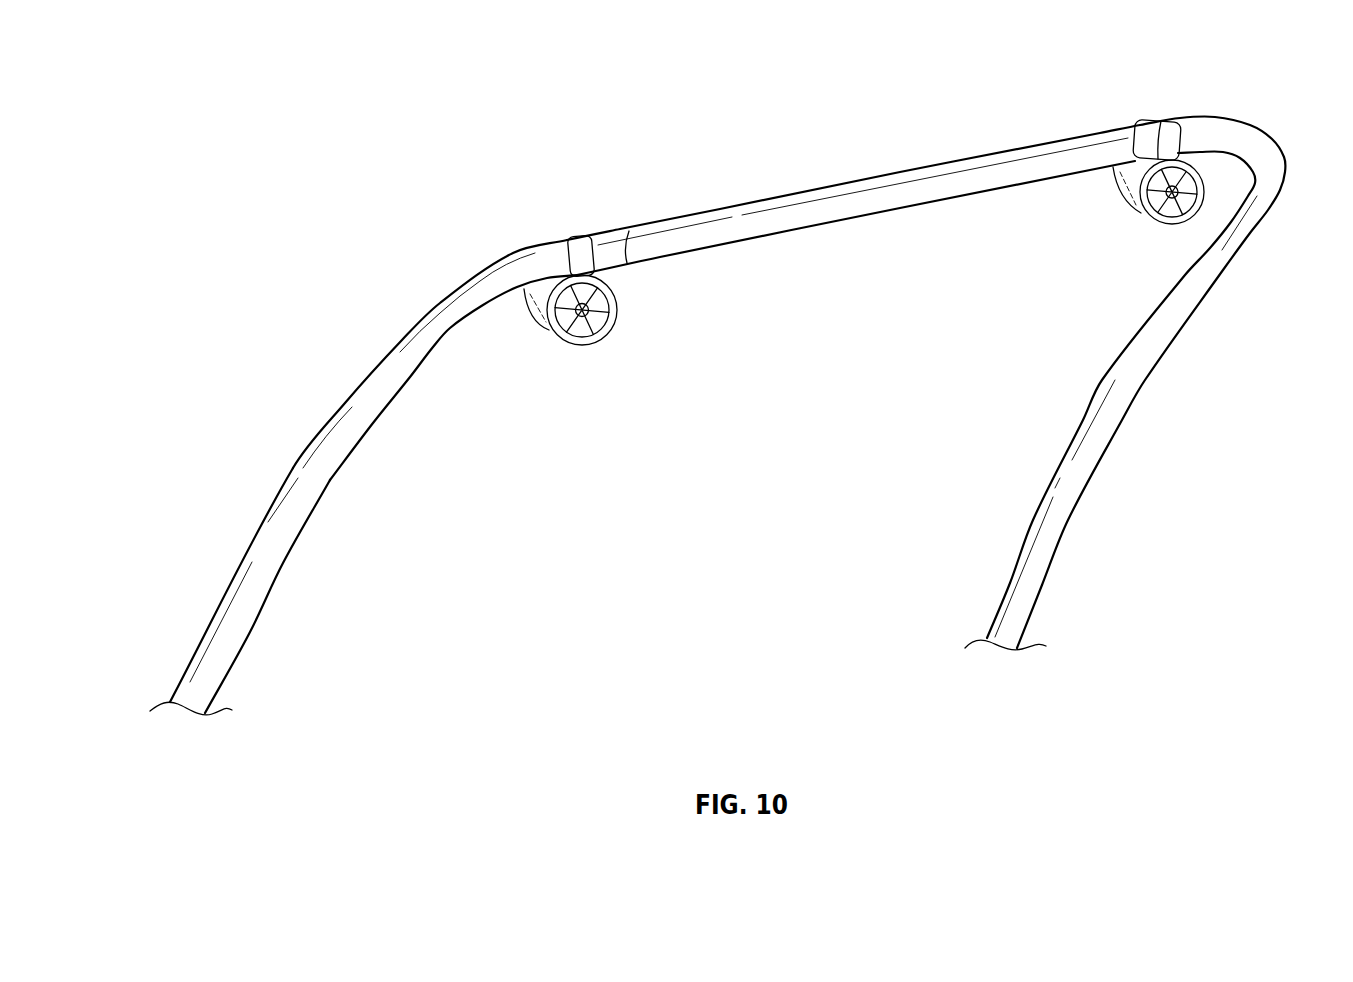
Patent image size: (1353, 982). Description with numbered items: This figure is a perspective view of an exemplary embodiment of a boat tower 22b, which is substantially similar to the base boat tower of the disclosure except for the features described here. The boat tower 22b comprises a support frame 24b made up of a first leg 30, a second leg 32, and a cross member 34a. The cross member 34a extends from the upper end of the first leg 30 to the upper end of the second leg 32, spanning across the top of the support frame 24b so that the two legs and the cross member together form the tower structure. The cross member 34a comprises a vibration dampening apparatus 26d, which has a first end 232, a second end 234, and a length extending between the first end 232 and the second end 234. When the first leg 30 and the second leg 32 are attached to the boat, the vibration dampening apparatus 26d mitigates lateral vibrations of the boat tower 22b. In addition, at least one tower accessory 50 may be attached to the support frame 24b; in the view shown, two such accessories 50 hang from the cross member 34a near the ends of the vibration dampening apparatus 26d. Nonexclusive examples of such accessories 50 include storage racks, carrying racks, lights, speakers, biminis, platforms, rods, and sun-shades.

The boat tower 22b is at (1237, 76).
The support frame 24b is at (417, 323).
The vibration dampening apparatus 26d is at (718, 210).
The cross member 34a is at (842, 186).
The first end 232 is at (676, 256).
The second end 234 is at (1050, 178).
The first leg 30 is at (1113, 403).
The second leg 32 is at (262, 540).
The tower accessory 50 is at (545, 326).